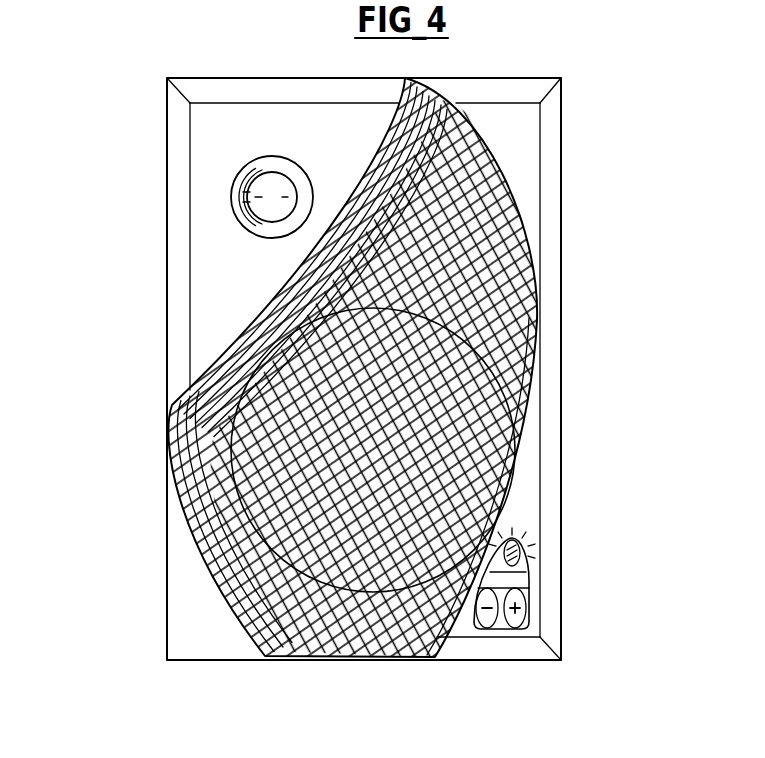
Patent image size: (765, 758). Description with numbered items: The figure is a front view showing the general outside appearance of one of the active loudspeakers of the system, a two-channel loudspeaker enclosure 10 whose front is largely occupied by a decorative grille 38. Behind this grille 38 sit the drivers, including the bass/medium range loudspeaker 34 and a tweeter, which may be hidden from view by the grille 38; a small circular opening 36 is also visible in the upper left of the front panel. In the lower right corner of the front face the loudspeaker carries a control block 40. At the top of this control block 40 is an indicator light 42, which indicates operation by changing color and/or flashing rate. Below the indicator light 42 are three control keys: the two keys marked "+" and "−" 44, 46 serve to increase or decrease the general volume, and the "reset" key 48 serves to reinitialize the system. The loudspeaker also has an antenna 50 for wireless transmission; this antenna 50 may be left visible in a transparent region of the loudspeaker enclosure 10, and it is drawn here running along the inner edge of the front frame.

The housing 10 is at (561, 136).
The base/medium range loudspeaker 34 is at (237, 455).
The port ring 36 is at (245, 192).
The decorative grille 38 is at (527, 287).
The control block 40 is at (528, 616).
The indicator light 42 is at (526, 550).
The "+" key 44 is at (480, 628).
The "−" key 46 is at (508, 622).
The reset key 48 is at (520, 580).
The antenna 50 is at (200, 118).